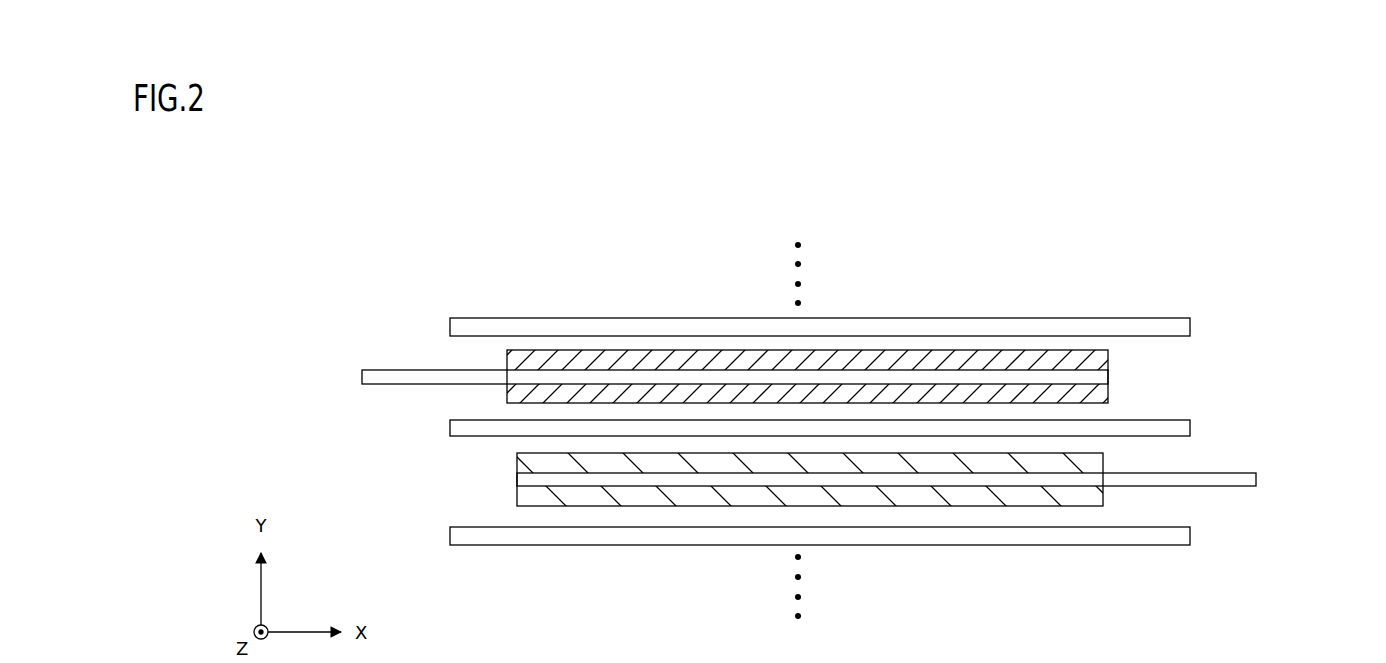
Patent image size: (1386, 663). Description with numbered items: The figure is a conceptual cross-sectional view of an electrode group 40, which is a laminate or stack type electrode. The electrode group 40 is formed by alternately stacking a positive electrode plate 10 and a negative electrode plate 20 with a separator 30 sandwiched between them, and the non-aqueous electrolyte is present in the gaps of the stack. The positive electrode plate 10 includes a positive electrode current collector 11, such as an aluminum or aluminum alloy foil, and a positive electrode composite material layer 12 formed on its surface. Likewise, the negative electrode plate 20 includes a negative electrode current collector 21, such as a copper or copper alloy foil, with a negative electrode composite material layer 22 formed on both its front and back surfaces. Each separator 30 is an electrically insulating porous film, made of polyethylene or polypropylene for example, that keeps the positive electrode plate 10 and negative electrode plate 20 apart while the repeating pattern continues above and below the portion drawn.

The electrode group 40 is at (488, 237).
The separator 30 is at (450, 327).
The positive electrode plate 10 is at (865, 376).
The positive electrode current collector 11 is at (1108, 377).
The positive electrode composite material layer 12 is at (1108, 360).
The negative electrode plate 20 is at (939, 480).
The negative electrode current collector 21 is at (1256, 479).
The negative electrode composite material layer 22 is at (1103, 462).